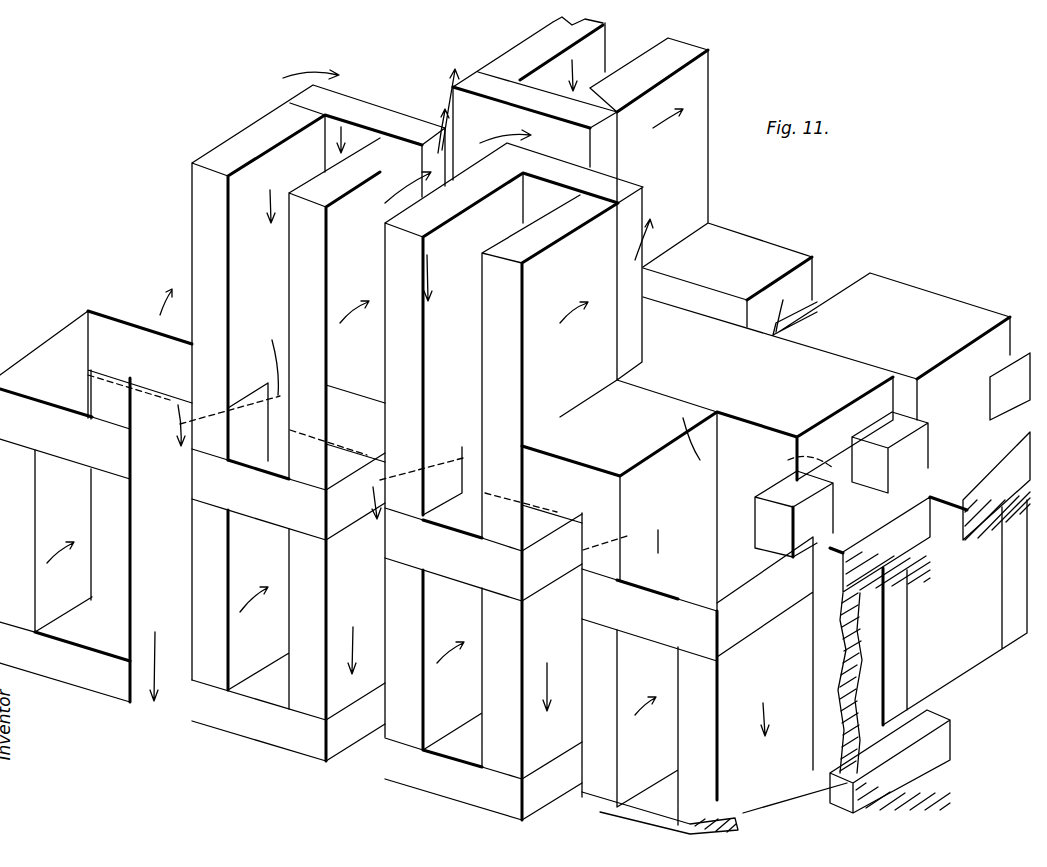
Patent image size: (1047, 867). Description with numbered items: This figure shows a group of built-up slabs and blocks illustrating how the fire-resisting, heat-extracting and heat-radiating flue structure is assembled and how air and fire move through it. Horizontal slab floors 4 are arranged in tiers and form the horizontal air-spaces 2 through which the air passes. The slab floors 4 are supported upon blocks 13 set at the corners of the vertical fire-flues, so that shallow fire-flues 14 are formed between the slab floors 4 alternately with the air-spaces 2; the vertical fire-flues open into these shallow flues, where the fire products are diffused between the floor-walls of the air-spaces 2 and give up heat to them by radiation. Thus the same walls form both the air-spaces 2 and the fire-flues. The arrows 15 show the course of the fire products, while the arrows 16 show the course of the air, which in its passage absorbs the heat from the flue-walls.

The air-spaces 2 is at (531, 421).
The slab floors 4 is at (475, 572).
The blocks 13 is at (892, 455).
The shallow fire-flues 14 is at (559, 483).
The arrows 15 is at (466, 398).
The arrows 16 is at (365, 392).